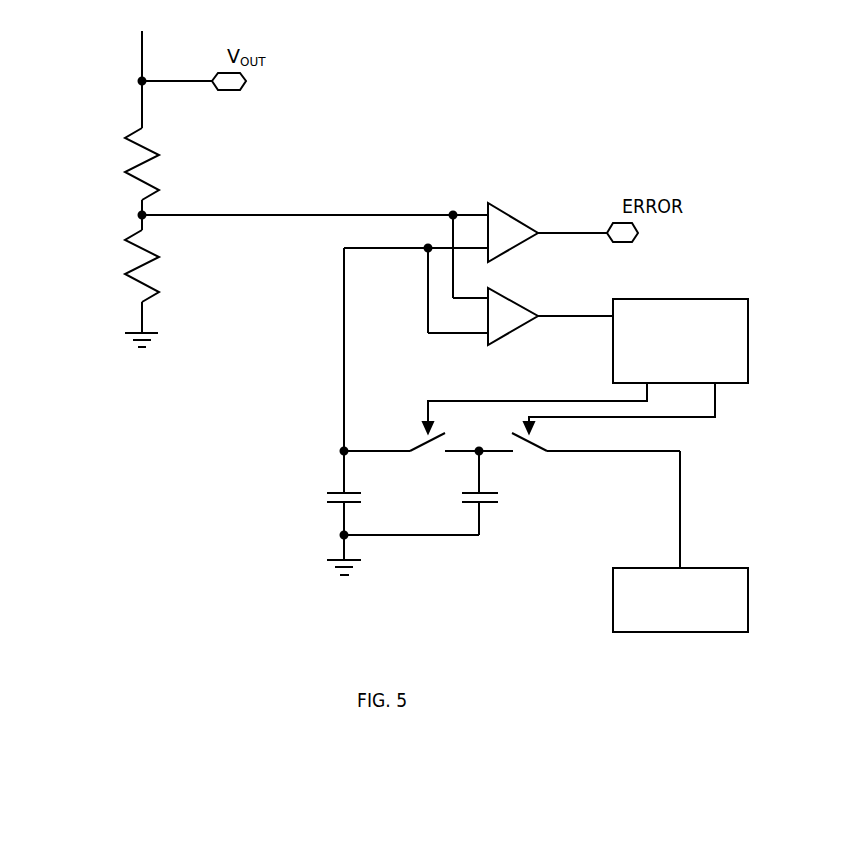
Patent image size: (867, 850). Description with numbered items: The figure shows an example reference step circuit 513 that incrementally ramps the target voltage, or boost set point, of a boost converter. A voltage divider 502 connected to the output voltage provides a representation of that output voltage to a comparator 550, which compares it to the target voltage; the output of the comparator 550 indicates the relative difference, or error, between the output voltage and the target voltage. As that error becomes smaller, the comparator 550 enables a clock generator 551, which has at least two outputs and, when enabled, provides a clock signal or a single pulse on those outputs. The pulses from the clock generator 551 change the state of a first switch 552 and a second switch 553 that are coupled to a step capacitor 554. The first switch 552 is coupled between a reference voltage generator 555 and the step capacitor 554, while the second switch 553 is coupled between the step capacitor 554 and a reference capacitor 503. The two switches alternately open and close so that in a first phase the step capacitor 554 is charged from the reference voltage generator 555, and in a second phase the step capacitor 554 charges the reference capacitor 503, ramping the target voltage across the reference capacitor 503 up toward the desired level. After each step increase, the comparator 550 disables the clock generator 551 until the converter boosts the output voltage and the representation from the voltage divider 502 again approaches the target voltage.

The voltage divider 502 is at (80, 206).
The reference capacitor 503 is at (297, 502).
The reference step circuit 513 is at (780, 434).
The comparator 550 is at (508, 296).
The clock generator 551 is at (725, 299).
The first switch 552 is at (580, 487).
The second switch 553 is at (420, 472).
The step capacitor 554 is at (485, 503).
The reference voltage generator 555 is at (725, 568).